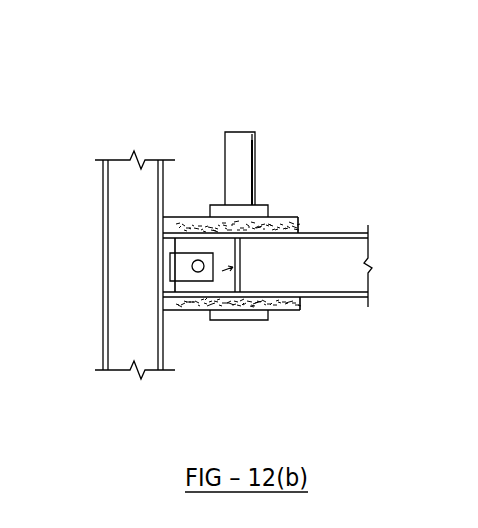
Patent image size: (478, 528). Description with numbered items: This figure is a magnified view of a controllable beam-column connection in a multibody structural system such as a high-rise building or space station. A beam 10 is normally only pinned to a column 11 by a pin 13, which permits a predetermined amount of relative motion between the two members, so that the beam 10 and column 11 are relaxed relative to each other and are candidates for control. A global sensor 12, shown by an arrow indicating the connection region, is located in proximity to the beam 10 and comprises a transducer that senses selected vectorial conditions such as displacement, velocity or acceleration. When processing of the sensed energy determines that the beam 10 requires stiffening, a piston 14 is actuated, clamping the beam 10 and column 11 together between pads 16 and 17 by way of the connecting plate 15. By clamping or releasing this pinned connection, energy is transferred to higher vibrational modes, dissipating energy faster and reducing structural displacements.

The beam 10 is at (340, 297).
The column 11 is at (122, 213).
The global sensor 12 is at (370, 145).
The pin 13 is at (192, 267).
The piston 14 is at (252, 165).
The web plate 15 is at (235, 283).
The pad 16 is at (300, 220).
The pad 17 is at (280, 315).